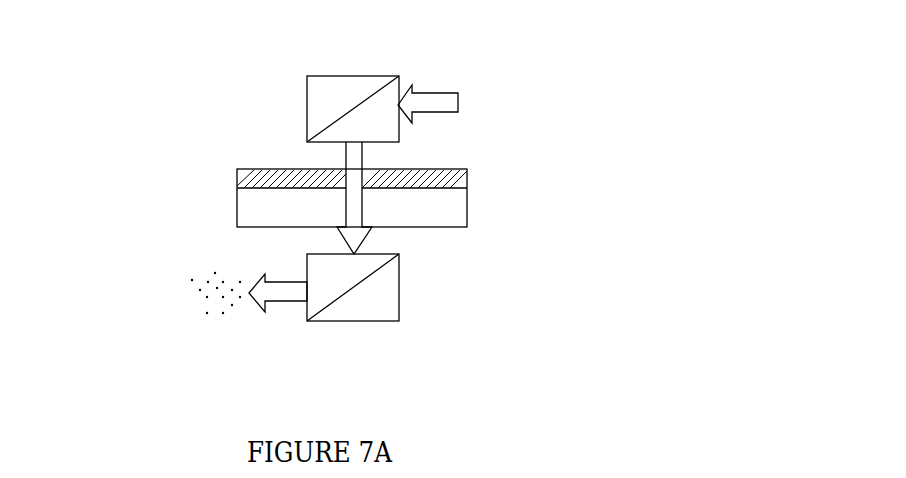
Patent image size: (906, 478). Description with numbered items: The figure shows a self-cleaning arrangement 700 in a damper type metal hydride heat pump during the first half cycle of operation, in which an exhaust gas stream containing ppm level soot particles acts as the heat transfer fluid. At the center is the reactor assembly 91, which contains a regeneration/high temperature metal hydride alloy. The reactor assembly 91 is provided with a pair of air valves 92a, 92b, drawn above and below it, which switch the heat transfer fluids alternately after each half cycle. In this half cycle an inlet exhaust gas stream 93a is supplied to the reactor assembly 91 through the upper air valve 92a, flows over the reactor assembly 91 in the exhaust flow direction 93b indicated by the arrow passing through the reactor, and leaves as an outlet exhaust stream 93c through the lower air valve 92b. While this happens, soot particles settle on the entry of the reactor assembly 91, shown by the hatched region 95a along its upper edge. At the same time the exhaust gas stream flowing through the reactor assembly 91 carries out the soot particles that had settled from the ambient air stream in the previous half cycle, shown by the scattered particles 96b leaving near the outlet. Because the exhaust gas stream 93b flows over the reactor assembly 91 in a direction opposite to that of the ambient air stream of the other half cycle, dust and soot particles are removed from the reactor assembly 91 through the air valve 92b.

The self-cleaning arrangement 700 is at (630, 158).
The reactor assembly 91 is at (250, 216).
The air valve 92a is at (307, 112).
The air valve 92b is at (378, 321).
The inlet exhaust gas stream 93a is at (412, 112).
The exhaust flow direction 93b is at (347, 208).
The outlet exhaust stream 93c is at (267, 303).
The settled soot particles at reactor entry 95a is at (262, 189).
The soot particles carried out of reactor assembly 96b is at (202, 302).